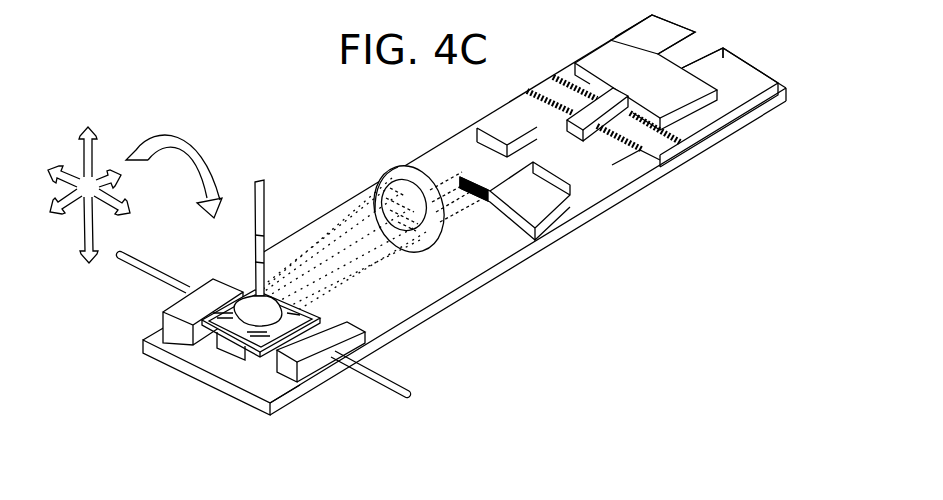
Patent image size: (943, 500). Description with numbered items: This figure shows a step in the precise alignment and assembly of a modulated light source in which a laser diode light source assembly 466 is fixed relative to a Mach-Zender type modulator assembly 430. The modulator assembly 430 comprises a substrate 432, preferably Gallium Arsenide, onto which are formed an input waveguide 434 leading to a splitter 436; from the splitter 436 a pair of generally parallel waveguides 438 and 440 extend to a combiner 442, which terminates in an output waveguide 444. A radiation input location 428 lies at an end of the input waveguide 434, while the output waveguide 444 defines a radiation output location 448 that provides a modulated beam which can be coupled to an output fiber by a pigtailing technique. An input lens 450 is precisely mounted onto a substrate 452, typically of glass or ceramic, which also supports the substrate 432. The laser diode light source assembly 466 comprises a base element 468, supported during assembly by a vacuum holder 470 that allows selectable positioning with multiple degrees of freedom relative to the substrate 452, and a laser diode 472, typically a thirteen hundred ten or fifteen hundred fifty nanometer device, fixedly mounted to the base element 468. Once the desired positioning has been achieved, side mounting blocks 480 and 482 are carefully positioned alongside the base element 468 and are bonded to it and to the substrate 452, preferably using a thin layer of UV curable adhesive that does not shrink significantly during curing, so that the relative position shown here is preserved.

The radiation input location 428 is at (482, 177).
The modulator assembly 430 is at (556, 239).
The substrate 432 is at (737, 92).
The input waveguide 434 is at (563, 205).
The splitter 436 is at (612, 165).
The waveguide 438 is at (692, 152).
The waveguide 440 is at (560, 94).
The combiner 442 is at (625, 68).
The output waveguide 444 is at (698, 47).
The radiation output location 448 is at (723, 50).
The input lens 450 is at (398, 172).
The substrate 452 is at (287, 383).
The laser diode light source assembly 466 is at (213, 268).
The base element 468 is at (258, 350).
The vacuum holder 470 is at (266, 197).
The laser diode 472 is at (178, 372).
The side mounting block 480 is at (370, 340).
The side mounting block 482 is at (173, 327).